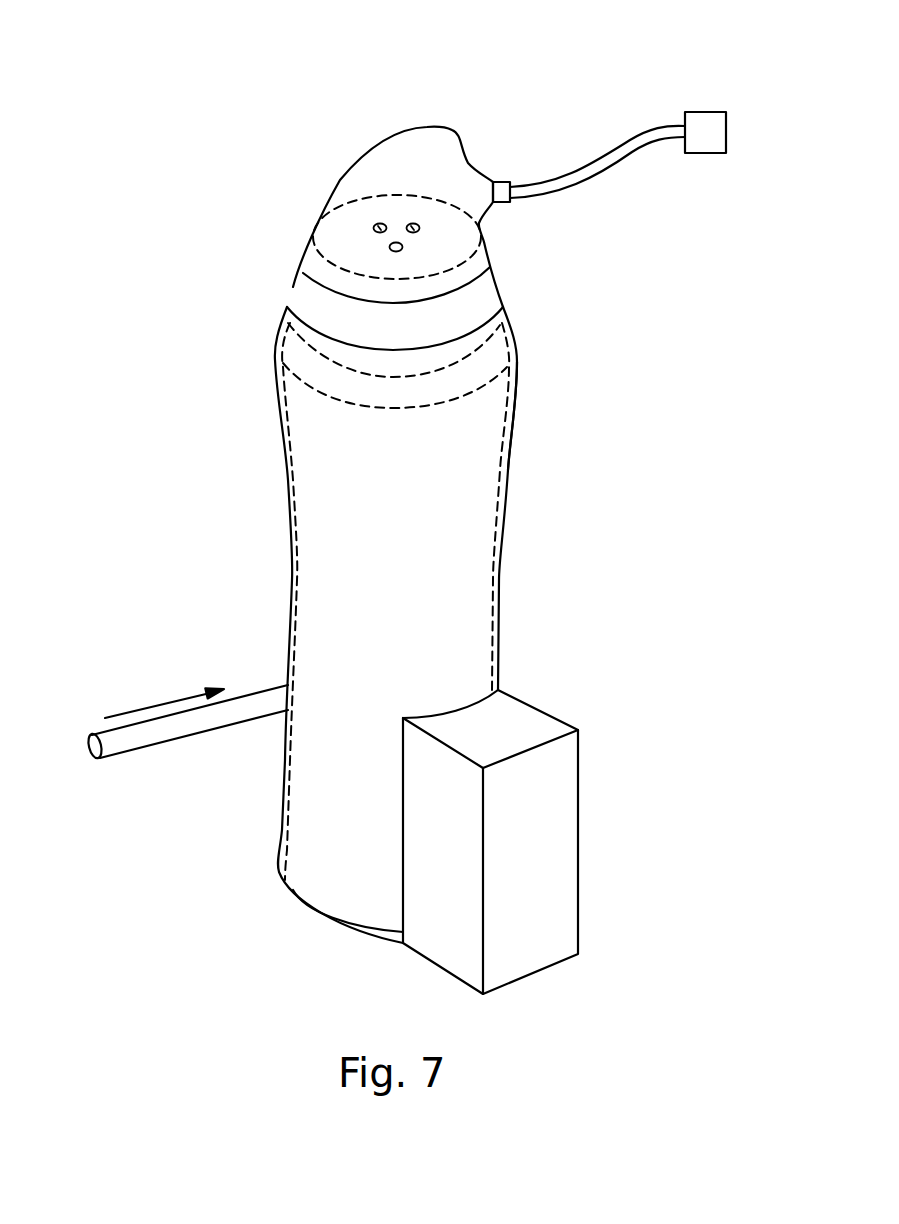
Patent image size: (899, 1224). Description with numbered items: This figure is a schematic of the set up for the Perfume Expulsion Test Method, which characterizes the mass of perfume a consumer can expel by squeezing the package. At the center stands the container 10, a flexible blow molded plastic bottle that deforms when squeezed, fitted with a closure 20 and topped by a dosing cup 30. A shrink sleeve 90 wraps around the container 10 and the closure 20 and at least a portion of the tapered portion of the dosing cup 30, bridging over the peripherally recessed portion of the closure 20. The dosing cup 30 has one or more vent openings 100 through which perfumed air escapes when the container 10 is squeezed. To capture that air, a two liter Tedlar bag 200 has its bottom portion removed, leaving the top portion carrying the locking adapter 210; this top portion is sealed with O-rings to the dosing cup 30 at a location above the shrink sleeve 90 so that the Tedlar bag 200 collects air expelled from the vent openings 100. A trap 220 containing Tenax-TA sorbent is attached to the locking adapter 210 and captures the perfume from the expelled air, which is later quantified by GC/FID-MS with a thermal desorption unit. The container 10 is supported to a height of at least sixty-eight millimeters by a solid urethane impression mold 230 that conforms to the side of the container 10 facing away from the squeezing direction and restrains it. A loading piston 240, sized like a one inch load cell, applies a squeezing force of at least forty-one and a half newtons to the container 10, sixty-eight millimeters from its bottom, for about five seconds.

The container 10 is at (308, 921).
The closure 20 is at (505, 345).
The dosing cup 30 is at (493, 288).
The shrink sleeve 90 is at (508, 457).
The vent opening 100 is at (408, 222).
The Tedlar bag 200 is at (452, 128).
The locking adapter 210 is at (502, 193).
The trap 220 is at (705, 132).
The impression mold 230 is at (540, 720).
The loading piston 240 is at (133, 742).